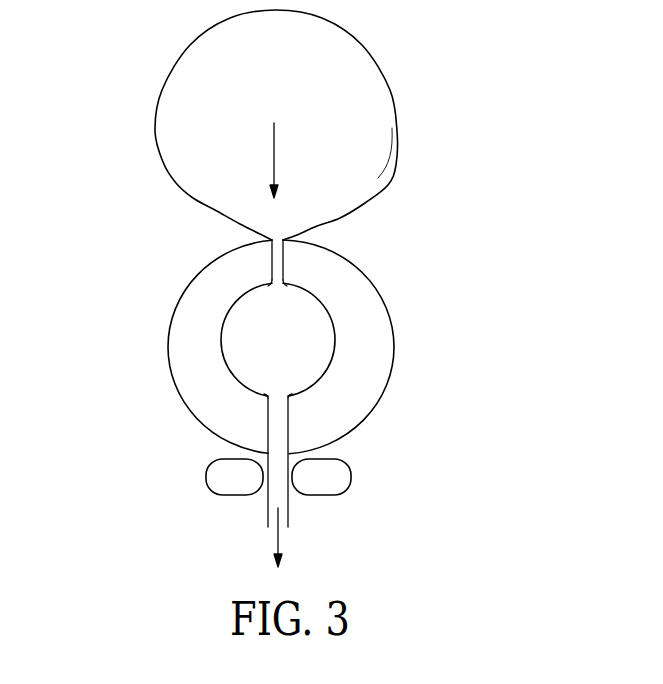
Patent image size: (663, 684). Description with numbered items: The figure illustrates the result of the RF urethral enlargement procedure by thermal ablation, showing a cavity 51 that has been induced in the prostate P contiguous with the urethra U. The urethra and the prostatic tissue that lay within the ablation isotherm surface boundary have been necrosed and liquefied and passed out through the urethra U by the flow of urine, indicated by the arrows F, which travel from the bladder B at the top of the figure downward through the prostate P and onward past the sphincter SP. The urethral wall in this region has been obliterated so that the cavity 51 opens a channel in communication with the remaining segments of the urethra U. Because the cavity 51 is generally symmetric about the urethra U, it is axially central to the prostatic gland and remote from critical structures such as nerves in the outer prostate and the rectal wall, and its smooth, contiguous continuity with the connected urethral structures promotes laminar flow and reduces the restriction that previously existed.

The bladder B is at (173, 62).
The arrows indicating flow of urine F is at (286, 342).
The urethra U is at (271, 263).
The prostate P is at (378, 290).
The cavity 51 is at (220, 337).
The sphincter SP is at (207, 473).